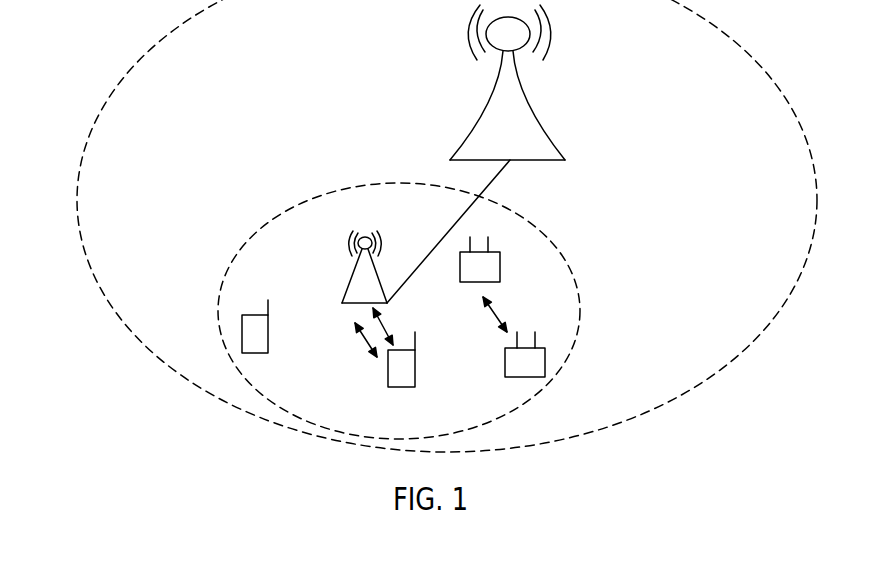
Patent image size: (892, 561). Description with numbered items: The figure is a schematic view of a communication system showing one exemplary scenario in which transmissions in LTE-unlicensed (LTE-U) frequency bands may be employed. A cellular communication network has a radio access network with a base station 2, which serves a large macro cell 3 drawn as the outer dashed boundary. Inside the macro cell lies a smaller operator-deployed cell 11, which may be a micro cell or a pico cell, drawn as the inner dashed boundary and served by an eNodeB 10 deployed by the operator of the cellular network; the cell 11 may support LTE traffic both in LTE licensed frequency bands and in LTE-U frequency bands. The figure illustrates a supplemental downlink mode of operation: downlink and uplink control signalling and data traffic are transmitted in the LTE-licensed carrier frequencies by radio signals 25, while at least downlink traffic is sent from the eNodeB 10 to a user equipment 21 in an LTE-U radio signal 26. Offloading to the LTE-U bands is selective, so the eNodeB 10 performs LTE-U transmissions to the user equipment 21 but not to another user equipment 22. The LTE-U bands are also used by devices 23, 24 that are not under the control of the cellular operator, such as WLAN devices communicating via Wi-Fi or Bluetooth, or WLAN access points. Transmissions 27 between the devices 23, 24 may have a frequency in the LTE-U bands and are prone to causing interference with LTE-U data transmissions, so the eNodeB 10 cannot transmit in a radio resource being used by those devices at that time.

The base station 2 is at (565, 160).
The macro cell 3 is at (743, 47).
The eNodeB 10 is at (345, 300).
The cell 11 is at (582, 297).
The user equipment 21 is at (388, 387).
The user equipment 22 is at (242, 353).
The device 23 is at (545, 375).
The device 24 is at (500, 280).
The radio signals 25 is at (366, 340).
The LTE-U radio signal 26 is at (382, 320).
The transmissions 27 is at (495, 315).